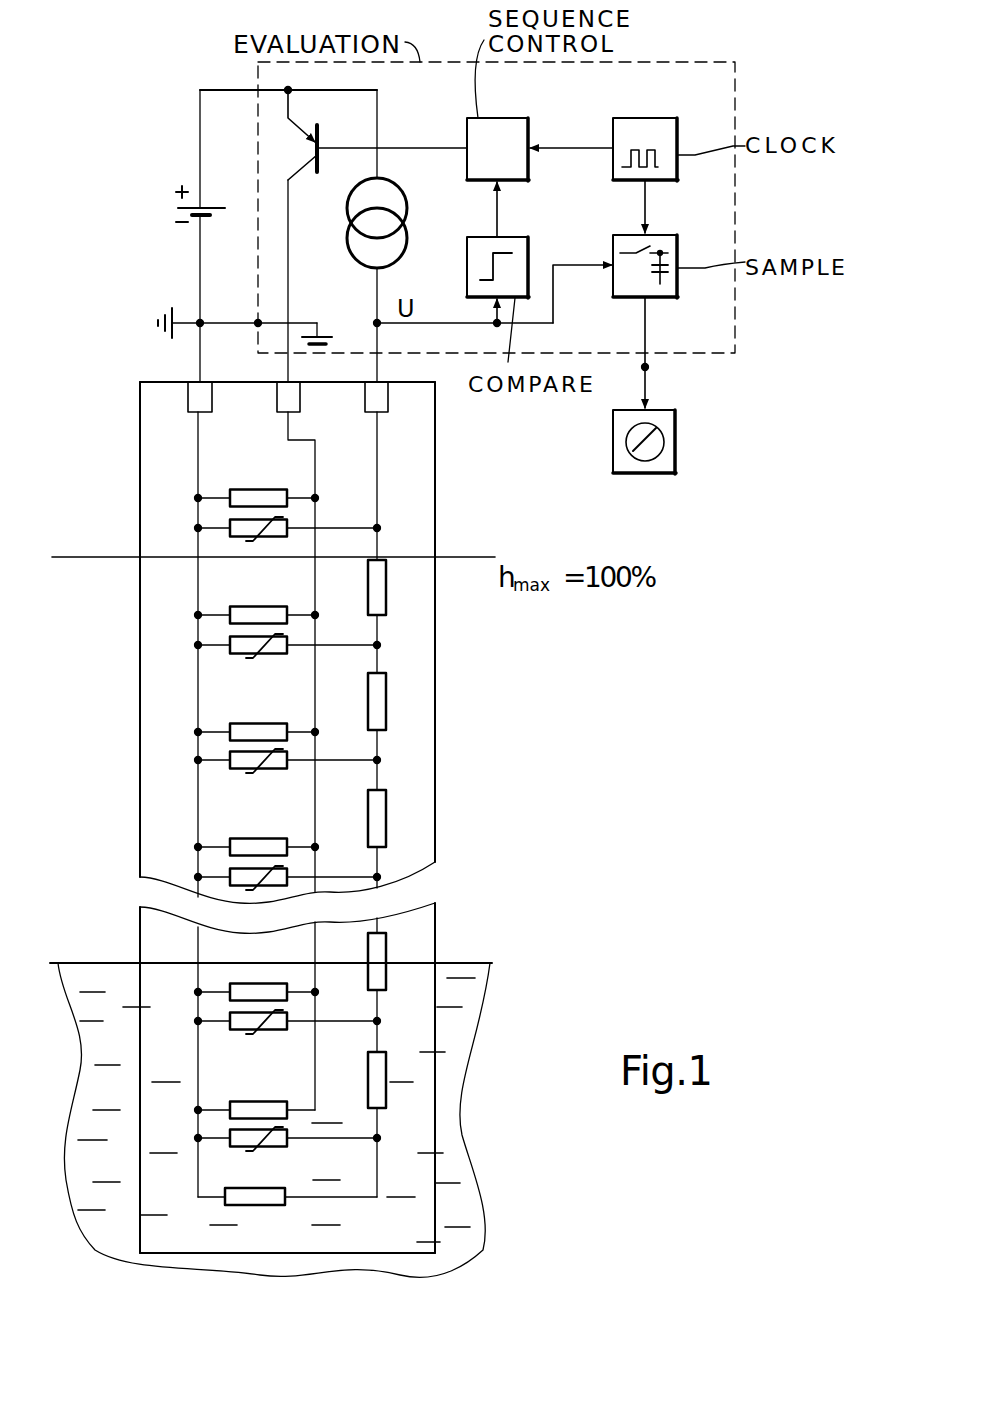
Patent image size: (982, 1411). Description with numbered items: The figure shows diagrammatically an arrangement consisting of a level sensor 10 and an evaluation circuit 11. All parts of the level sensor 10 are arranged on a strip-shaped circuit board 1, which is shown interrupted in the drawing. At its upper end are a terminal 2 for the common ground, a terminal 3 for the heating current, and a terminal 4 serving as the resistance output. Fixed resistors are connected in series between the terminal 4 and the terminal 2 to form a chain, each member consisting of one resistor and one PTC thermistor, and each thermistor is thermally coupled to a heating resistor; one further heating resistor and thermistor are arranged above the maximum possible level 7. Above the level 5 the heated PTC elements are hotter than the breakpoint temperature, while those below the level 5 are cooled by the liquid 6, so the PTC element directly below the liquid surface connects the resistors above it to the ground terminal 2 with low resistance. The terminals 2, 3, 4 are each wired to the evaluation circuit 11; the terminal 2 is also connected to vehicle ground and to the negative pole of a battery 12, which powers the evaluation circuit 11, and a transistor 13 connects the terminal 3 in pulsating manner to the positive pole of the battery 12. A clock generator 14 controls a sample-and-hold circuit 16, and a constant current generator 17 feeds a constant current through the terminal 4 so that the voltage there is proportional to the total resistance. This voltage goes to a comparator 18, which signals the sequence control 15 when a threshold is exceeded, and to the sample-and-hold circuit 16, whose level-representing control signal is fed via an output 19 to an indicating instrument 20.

The strip-shaped circuit board 1 is at (433, 858).
The terminal 2 is at (206, 390).
The terminal 3 is at (292, 390).
The terminal 4 is at (381, 390).
The level 5 is at (477, 958).
The liquid 6 is at (274, 1120).
The maximum possible level 7 is at (480, 550).
The level sensor 10 is at (114, 733).
The evaluation circuit 11 is at (725, 102).
The battery 12 is at (209, 201).
The transistor 13 is at (324, 135).
The clock generator 14 is at (604, 160).
The sequence control 15 is at (500, 134).
The sample-and-hold circuit 16 is at (650, 251).
The constant current generator 17 is at (395, 219).
The comparator 18 is at (500, 240).
The output 19 is at (623, 352).
The indicating instrument 20 is at (667, 438).